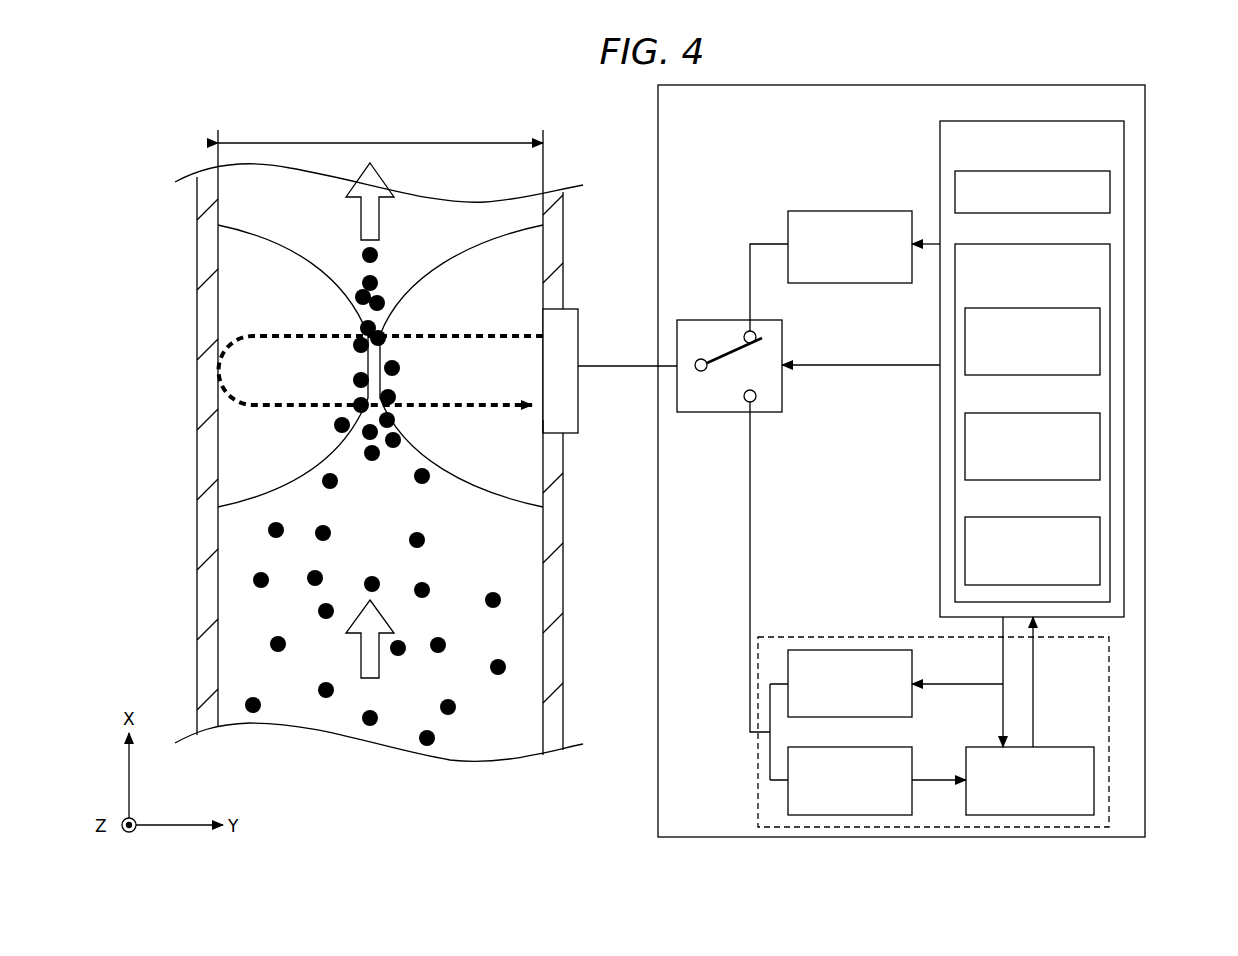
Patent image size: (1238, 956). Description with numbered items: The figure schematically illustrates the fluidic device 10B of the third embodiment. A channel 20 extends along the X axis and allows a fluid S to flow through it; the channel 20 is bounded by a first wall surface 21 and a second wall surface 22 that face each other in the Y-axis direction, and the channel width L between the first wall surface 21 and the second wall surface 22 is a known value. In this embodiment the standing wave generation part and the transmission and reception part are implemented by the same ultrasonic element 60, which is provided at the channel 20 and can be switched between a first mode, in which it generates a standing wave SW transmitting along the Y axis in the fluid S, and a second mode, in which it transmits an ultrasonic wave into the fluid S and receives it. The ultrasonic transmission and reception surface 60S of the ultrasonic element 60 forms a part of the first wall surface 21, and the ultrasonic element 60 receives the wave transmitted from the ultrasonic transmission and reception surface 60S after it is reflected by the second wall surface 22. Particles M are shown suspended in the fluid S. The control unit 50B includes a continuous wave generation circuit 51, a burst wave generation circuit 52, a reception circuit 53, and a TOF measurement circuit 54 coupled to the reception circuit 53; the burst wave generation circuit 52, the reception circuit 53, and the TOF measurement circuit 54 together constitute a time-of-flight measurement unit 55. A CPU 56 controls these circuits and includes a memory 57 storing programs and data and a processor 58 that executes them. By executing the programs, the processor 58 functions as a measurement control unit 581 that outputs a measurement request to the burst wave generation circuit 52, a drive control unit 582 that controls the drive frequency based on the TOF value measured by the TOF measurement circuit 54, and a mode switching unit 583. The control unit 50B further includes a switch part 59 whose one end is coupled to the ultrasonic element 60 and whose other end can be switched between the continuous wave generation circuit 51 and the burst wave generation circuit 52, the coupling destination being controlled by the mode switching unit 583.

The fluidic device 10B is at (606, 172).
The channel 20 is at (197, 295).
The first wall surface 21 is at (553, 545).
The second wall surface 22 is at (220, 540).
The control unit 50B is at (1145, 118).
The continuous wave generation circuit 51 is at (867, 211).
The burst wave generation circuit 52 is at (912, 662).
The reception circuit 53 is at (912, 758).
The TOF measurement circuit 54 is at (1052, 747).
The time-of-flight measurement unit 55 is at (792, 637).
The central processing unit (CPU) 56 is at (1082, 120).
The memory 57 is at (1060, 171).
The processor 58 is at (1060, 244).
The measurement control unit 581 is at (1037, 308).
The drive control unit 582 is at (1037, 413).
The mode switching unit 583 is at (1037, 517).
The switch part 59 is at (700, 319).
The ultrasonic element 60 is at (568, 309).
The ultrasonic transmission and reception surface 60S is at (538, 428).
The channel width L is at (380, 157).
The particles (measurement object) M is at (272, 638).
The fluid S is at (243, 670).
The standing wave SW is at (490, 488).